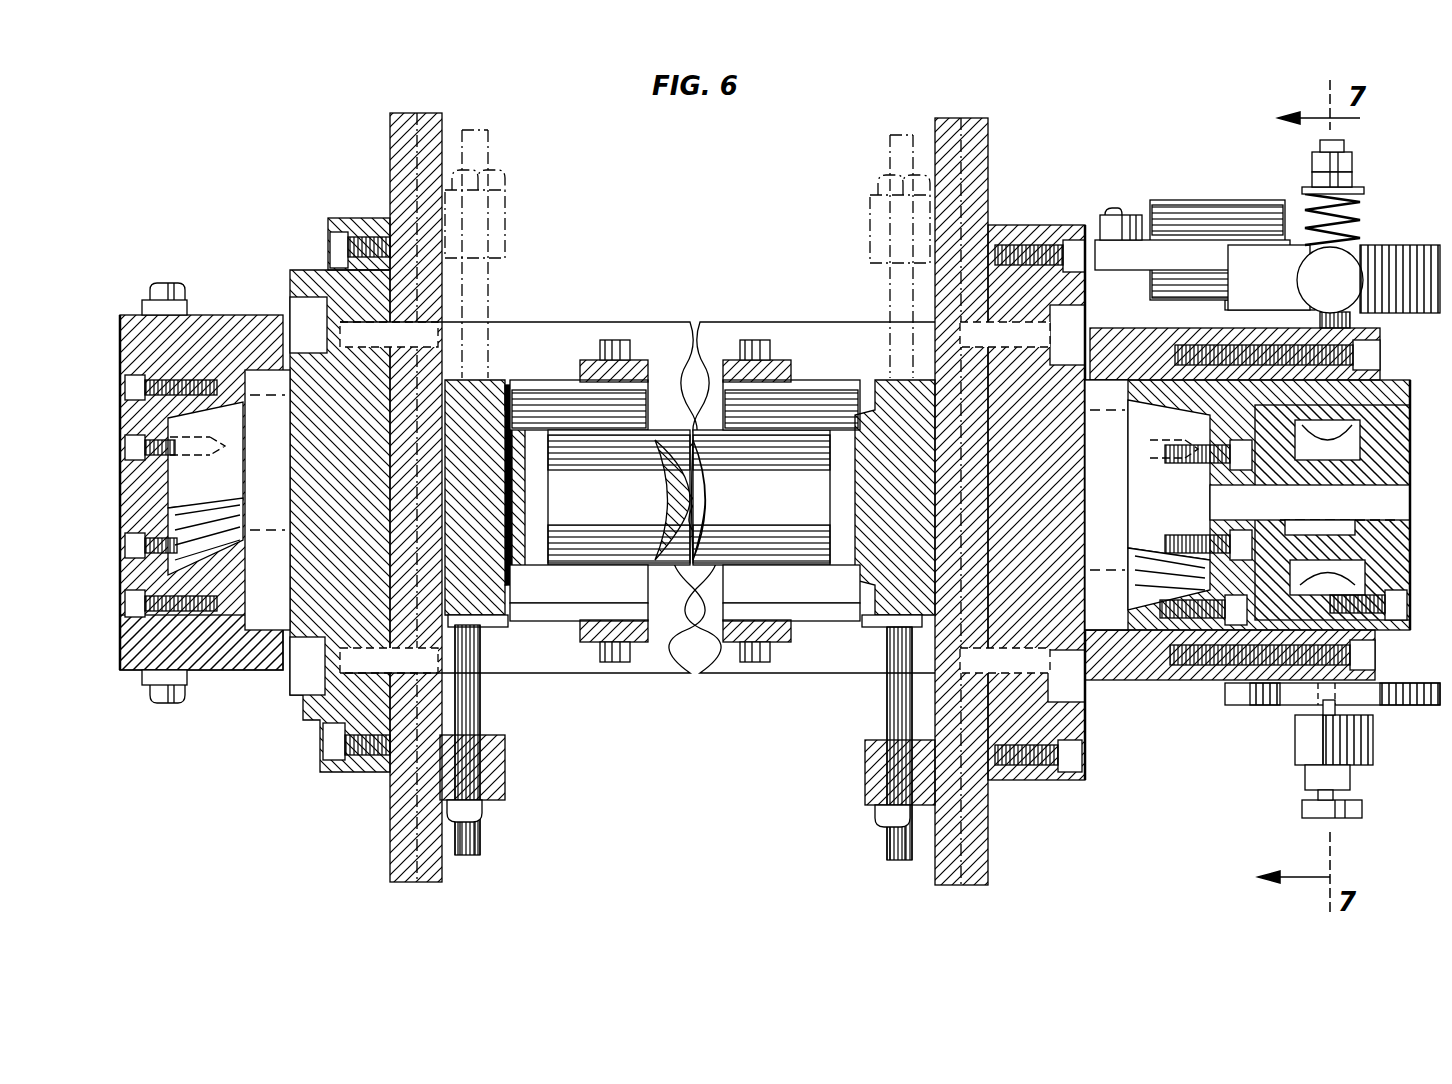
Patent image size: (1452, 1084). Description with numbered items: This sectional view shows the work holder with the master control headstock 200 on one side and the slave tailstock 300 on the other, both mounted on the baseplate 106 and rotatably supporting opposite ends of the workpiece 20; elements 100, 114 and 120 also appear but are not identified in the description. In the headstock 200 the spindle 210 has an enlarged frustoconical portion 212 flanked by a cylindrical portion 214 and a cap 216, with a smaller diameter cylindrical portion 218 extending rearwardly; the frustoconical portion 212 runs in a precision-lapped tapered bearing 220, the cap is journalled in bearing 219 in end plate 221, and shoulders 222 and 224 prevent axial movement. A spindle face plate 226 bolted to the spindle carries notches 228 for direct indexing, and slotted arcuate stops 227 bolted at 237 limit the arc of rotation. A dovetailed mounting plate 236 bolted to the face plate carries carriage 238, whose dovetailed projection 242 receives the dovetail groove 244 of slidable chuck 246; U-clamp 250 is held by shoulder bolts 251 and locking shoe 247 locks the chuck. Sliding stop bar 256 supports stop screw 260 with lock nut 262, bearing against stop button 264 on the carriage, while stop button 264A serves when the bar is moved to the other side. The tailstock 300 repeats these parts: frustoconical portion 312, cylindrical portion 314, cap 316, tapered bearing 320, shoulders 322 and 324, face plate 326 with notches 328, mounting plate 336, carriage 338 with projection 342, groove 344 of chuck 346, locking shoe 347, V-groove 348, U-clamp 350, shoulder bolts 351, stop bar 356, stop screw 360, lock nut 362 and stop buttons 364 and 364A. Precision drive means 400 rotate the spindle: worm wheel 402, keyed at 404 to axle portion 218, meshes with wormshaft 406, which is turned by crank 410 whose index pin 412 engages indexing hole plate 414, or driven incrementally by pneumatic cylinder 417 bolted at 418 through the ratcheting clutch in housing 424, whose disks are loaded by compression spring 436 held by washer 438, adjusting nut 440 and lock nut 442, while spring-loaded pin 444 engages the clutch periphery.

The workpiece 20 is at (720, 513).
The first shaft section 100 is at (618, 325).
The baseplate 106 is at (808, 325).
The end plate 114 is at (120, 318).
The bolt 120 is at (158, 283).
The master control headstock 200 is at (1264, 565).
The spindle 210 is at (1422, 481).
The frustoconical portion 212 is at (1166, 503).
The cylindrical portion 214 is at (1090, 473).
The cap 216 is at (1258, 580).
The smaller diameter cylindrical portion 218 is at (1225, 506).
The bearing 219 is at (1400, 530).
The tapered bearing 220 is at (1135, 405).
The end plate 221 is at (1410, 430).
The shoulder 222 is at (1230, 655).
The shoulder 224 is at (1185, 575).
The spindle face plate 226 is at (1005, 225).
The arcuate stops 227 is at (1080, 225).
The notches 228 is at (1100, 308).
The dovetailed mounting plate 236 is at (964, 132).
The bolts 237 is at (1045, 245).
The carriage 238 is at (868, 626).
The dovetailed projection 242 is at (855, 512).
The dovetail groove 244 is at (848, 578).
The slidable chuck 246 is at (797, 400).
The locking shoe 247 is at (838, 382).
The U-clamp 250 is at (732, 622).
The shoulder bolts 251 is at (765, 665).
The sliding stop bar 256 is at (868, 222).
The stop screw 260 is at (890, 858).
The lock nut 262 is at (880, 818).
The stop button 264 is at (880, 640).
The stop button 264A is at (905, 405).
The slave tailstock 300 is at (179, 452).
The frustoconical portion 312 is at (183, 493).
The cylindrical portion 314 is at (253, 463).
The cap 316 is at (168, 512).
The tapered bearing 320 is at (235, 400).
The shoulder 322 is at (238, 610).
The shoulder 324 is at (125, 560).
The face plate 326 is at (355, 225).
The notches 328 is at (298, 283).
The dovetailed mounting plate 336 is at (414, 130).
The carriage 338 is at (506, 380).
The dovetailed projection 342 is at (520, 470).
The dovetail groove 344 is at (530, 578).
The slidable chuck 346 is at (568, 622).
The locking shoe 347 is at (545, 382).
The V-groove 348 is at (650, 590).
The U-clamp 350 is at (638, 372).
The shoulder bolts 351 is at (622, 355).
The sliding stop bar 356 is at (515, 235).
The stop screw 360 is at (485, 712).
The lock nut 362 is at (483, 810).
The stop button 364 is at (495, 628).
The stop button 364A is at (462, 405).
The precision drive means 400 is at (1262, 708).
The worm wheel 402 is at (1365, 568).
The key 404 is at (1290, 522).
The wormshaft 406 is at (1350, 325).
The crank 410 is at (1362, 752).
The index pin 412 is at (1362, 815).
The indexing hole plate 414 is at (1415, 708).
The pneumatic cylinder 417 is at (1196, 200).
The bolt 418 is at (1120, 213).
The clutch housing 424 is at (1395, 262).
The compression spring 436 is at (1362, 215).
The washer 438 is at (1362, 189).
The adjusting nut 440 is at (1352, 168).
The lock nut 442 is at (1310, 172).
The spring-loaded pin 444 is at (1302, 281).